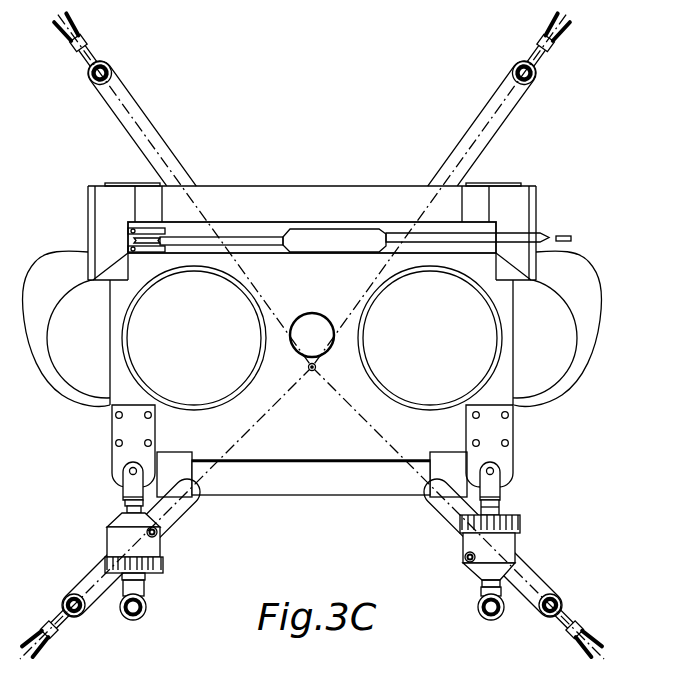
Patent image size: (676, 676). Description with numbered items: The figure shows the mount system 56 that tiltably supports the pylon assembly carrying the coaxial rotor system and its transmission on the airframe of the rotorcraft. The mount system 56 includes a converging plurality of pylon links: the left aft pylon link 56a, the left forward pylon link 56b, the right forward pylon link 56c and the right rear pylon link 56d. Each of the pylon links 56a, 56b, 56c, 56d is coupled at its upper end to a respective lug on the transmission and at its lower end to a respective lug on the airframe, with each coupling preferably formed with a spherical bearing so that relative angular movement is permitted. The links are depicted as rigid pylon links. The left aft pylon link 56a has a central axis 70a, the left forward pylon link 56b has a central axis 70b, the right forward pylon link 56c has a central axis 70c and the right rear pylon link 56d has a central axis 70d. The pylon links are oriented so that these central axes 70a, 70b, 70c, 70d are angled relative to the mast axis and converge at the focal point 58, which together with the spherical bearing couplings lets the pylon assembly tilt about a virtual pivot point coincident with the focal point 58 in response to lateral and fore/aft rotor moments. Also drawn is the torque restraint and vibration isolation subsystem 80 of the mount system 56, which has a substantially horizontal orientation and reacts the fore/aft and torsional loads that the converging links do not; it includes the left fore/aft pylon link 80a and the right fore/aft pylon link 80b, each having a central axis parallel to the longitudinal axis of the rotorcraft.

The mount system 56 is at (111, 105).
The left aft pylon link 56a is at (110, 110).
The left forward pylon link 56b is at (90, 573).
The right forward pylon link 56c is at (533, 578).
The right rear pylon link 56d is at (514, 110).
The focal point 58 is at (312, 372).
The central axis 70a is at (140, 125).
The central axis 70b is at (167, 515).
The central axis 70c is at (457, 515).
The central axis 70d is at (484, 125).
The torque restraint and vibration isolation subsystem 80 is at (84, 541).
The left fore/aft pylon link 80a is at (110, 540).
The right fore/aft pylon link 80b is at (510, 542).